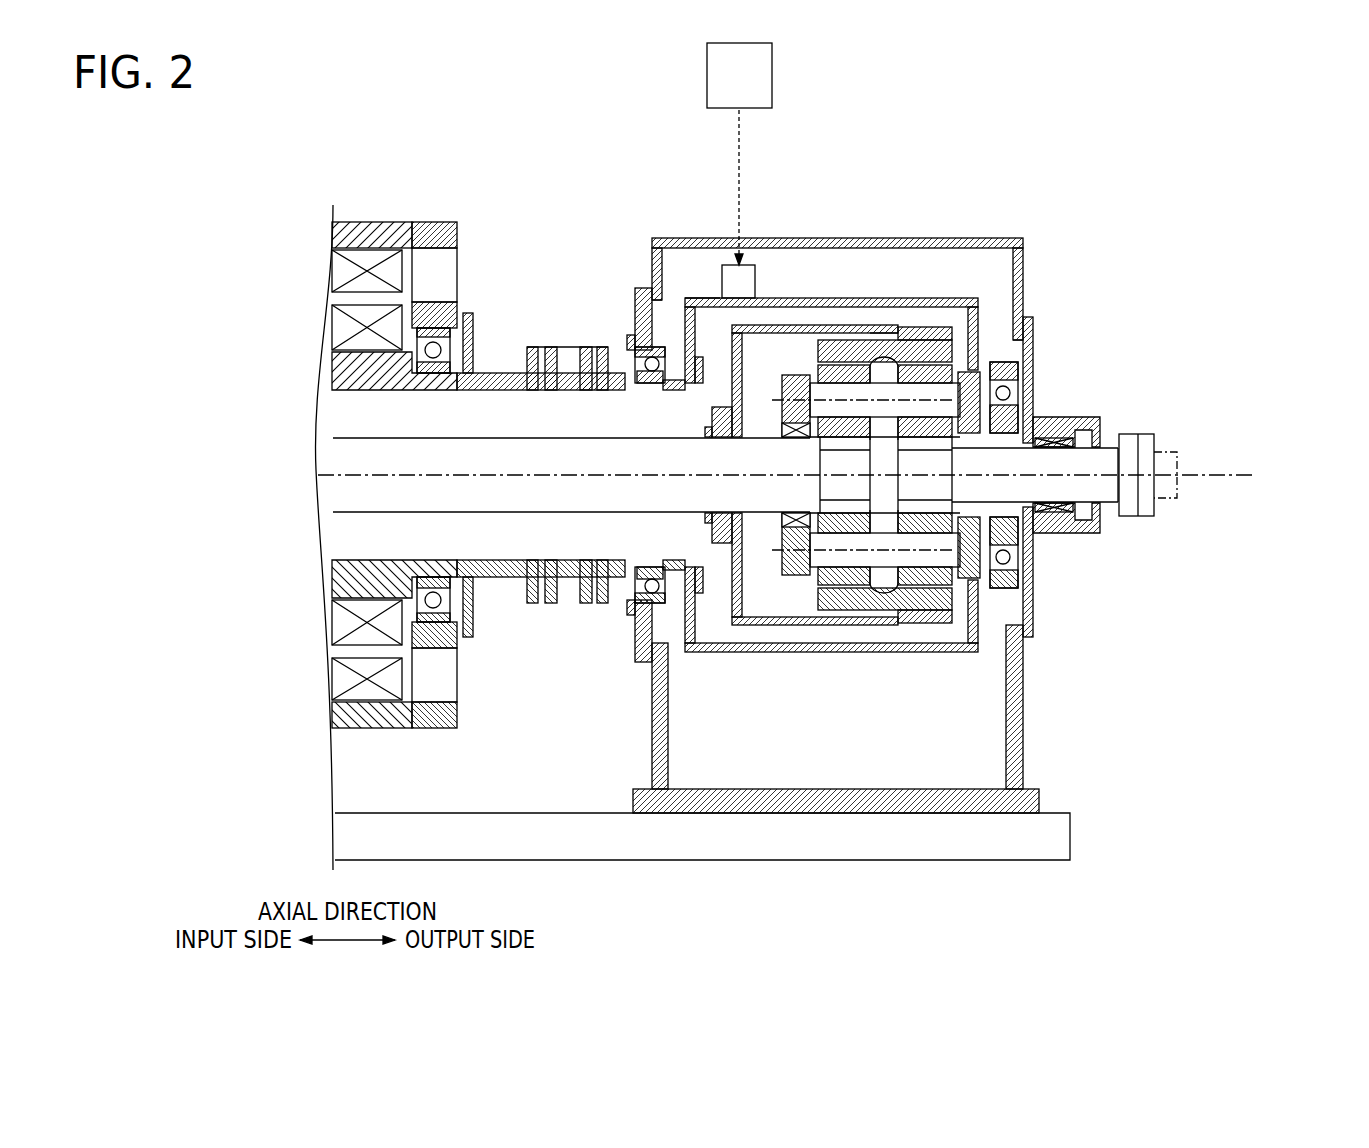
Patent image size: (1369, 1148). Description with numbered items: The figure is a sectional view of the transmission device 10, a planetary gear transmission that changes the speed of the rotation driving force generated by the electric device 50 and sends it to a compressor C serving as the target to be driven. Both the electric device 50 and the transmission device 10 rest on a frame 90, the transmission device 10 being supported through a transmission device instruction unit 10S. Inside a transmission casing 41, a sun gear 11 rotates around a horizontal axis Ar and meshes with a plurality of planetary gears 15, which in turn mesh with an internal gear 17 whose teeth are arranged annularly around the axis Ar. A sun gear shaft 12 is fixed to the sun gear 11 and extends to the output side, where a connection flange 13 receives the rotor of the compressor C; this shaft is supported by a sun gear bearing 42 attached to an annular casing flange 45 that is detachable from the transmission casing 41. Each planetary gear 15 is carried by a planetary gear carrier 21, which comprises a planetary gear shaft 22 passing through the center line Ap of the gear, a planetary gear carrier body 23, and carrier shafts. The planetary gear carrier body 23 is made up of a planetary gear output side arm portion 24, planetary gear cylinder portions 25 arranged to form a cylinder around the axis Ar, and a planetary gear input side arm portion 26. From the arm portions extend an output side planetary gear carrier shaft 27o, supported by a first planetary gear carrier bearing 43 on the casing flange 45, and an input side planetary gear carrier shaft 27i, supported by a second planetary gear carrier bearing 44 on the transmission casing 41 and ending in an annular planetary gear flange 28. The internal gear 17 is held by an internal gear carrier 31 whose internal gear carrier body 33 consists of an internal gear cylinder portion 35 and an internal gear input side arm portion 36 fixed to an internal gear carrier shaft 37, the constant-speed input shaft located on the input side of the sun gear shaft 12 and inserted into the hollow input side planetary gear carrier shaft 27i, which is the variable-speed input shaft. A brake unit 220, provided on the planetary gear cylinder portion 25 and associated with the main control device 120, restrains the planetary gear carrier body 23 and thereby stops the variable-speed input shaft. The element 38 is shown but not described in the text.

The transmission device 10 is at (1020, 218).
The transmission device instruction unit 10S is at (1019, 750).
The sun gear 11 is at (1064, 510).
The sun gear shaft 12 is at (1109, 493).
The connection flange 13 is at (1125, 514).
The planetary gear 15 is at (820, 372).
The internal gear 17 is at (922, 345).
The planetary gear carrier 21 is at (956, 285).
The planetary gear shaft 22 is at (850, 390).
The planetary gear carrier body 23 is at (717, 298).
The planetary gear output side arm portion 24 is at (980, 302).
The planetary gear cylinder portion 25 is at (878, 325).
The planetary gear input side arm portion 26 is at (673, 355).
The input side planetary gear carrier shaft 27i is at (648, 318).
The output side planetary gear carrier shaft 27o is at (1033, 358).
The planetary gear flange 28 is at (600, 346).
The internal gear carrier 31 is at (655, 625).
The internal gear carrier body 33 is at (805, 900).
The internal gear cylinder portion 35 is at (795, 627).
The internal gear input side arm portion 36 is at (721, 592).
The internal gear carrier shaft 37 is at (672, 500).
The rotor sleeve 38 is at (608, 520).
The transmission casing 41 is at (637, 236).
The sun gear bearing 42 is at (1058, 508).
The first planetary gear carrier bearing 43 is at (1010, 393).
The second planetary gear carrier bearing 44 is at (627, 357).
The casing flange 45 is at (1031, 606).
The electric device 50 is at (382, 202).
The frame 90 is at (1047, 836).
The main control device 120 is at (772, 75).
The brake unit 220 is at (745, 280).
The center line Ap is at (922, 372).
The axis Ar is at (1208, 474).
The compressor C is at (1153, 438).